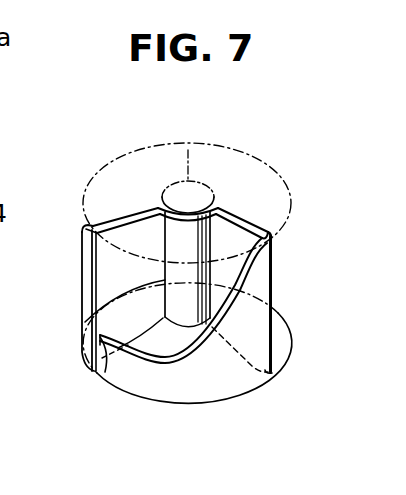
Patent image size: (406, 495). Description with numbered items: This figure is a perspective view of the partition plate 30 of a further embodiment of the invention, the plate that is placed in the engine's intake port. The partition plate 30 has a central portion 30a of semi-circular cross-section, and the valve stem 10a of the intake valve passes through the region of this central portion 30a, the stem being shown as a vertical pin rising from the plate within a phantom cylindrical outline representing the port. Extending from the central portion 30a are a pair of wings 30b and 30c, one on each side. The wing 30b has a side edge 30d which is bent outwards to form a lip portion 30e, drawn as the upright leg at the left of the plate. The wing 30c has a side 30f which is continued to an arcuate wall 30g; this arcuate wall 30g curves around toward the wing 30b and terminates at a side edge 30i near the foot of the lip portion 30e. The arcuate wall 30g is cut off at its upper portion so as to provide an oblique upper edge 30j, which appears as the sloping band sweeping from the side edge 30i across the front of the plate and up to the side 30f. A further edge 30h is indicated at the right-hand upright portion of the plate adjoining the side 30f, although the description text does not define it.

The valve stem 10a is at (188, 149).
The partition plate 30 is at (137, 208).
The central portion 30a is at (214, 226).
The wing 30b is at (103, 293).
The wing 30c is at (236, 231).
The side edge 30d is at (82, 278).
The lip portion 30e is at (82, 260).
The side 30f is at (276, 228).
The arcuate wall 30g is at (198, 392).
The clip right leg 30h is at (275, 285).
The side edge 30i is at (105, 374).
The oblique upper edge 30j is at (152, 362).